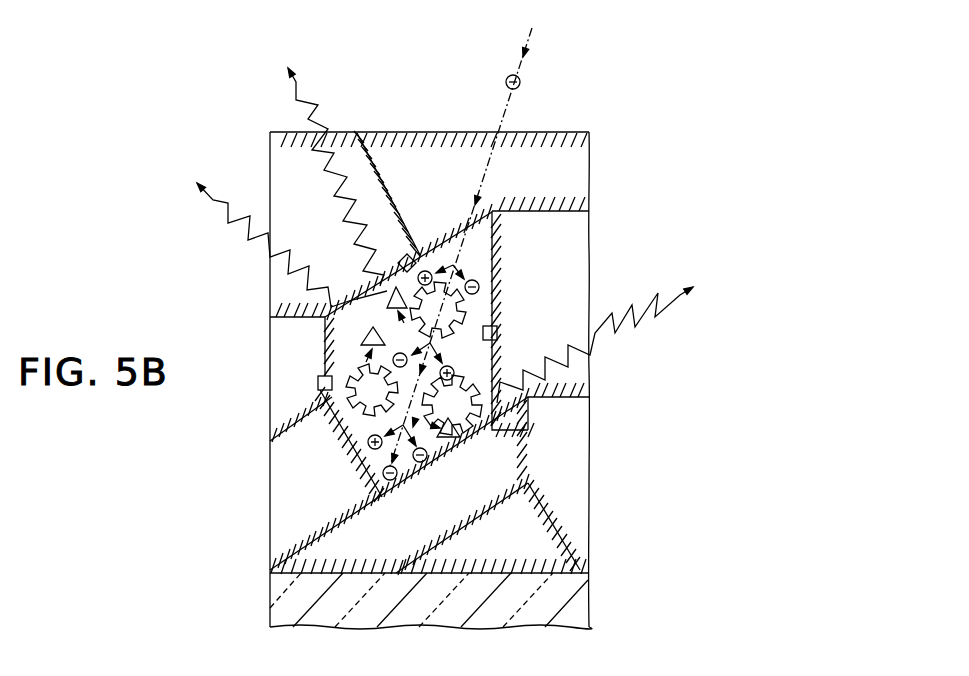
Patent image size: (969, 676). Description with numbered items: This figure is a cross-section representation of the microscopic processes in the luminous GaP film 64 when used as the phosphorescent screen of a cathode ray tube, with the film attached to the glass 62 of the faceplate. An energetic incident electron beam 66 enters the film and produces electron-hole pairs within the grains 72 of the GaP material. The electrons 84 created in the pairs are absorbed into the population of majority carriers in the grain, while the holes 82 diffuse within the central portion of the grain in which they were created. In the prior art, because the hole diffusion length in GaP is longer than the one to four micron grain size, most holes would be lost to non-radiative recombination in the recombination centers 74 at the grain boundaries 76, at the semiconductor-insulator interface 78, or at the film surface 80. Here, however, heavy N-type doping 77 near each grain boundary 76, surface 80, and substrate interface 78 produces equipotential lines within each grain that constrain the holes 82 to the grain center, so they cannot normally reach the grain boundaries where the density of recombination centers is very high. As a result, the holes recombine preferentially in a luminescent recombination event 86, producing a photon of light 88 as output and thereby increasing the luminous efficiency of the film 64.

The glass 62 is at (577, 612).
The luminous film 64 is at (395, 112).
The electron beam 66 is at (528, 43).
The grains 72 is at (500, 470).
The recombination centers 74 is at (498, 333).
The grain boundaries 76 is at (588, 238).
The heavy doping 77 is at (497, 250).
The semiconductor-insulator interface 78 is at (553, 572).
The film surface 80 is at (560, 132).
The holes 82 is at (368, 442).
The electrons 84 is at (413, 455).
The luminescent recombination event 86 is at (362, 342).
The photon of light 88 is at (230, 203).